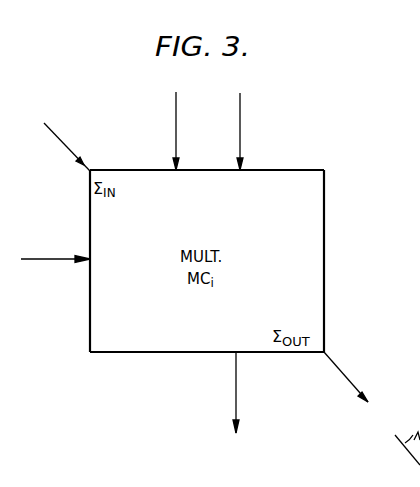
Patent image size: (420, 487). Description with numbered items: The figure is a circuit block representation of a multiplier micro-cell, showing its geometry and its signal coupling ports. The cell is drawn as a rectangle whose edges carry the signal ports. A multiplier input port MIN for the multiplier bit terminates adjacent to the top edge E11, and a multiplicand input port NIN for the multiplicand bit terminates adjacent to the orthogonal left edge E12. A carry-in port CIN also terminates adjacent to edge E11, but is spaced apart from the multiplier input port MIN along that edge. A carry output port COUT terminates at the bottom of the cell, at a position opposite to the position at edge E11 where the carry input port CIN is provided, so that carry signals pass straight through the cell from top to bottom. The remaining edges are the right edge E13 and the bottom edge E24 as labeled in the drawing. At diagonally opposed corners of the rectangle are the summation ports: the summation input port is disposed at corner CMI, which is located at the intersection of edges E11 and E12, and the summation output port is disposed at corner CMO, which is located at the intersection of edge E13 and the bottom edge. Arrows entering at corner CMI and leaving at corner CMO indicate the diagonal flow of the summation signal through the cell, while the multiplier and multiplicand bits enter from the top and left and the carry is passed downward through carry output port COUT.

The edge E11 is at (272, 170).
The edge E12 is at (90, 320).
The edge E13 is at (324, 236).
The bottom edge of multiplier cell E24 is at (153, 352).
The corner CMI is at (92, 168).
The corner CMO is at (327, 352).
The multiplier input port MIN is at (177, 129).
The carry-in port CIN is at (242, 145).
The multiplicand input port NIN is at (50, 262).
The carry output port COUT is at (227, 380).